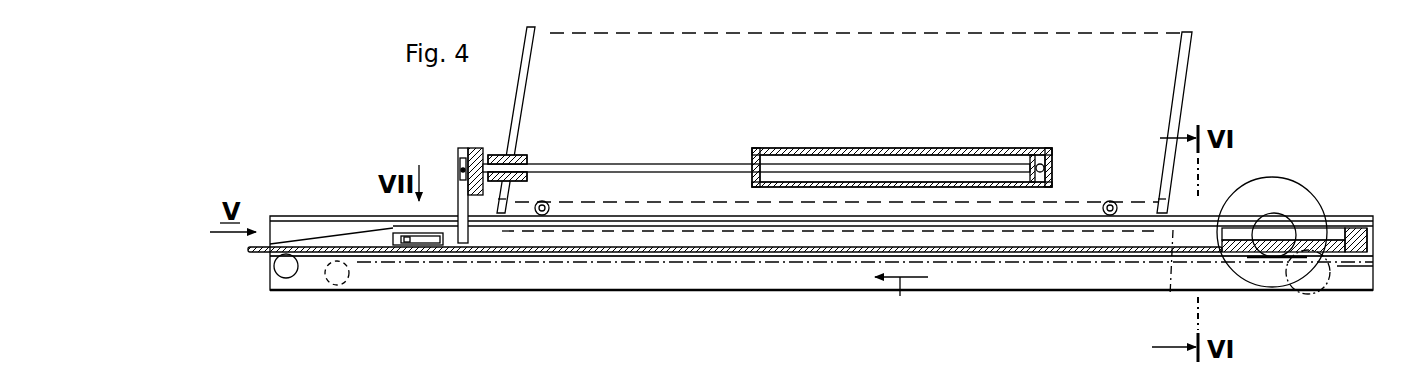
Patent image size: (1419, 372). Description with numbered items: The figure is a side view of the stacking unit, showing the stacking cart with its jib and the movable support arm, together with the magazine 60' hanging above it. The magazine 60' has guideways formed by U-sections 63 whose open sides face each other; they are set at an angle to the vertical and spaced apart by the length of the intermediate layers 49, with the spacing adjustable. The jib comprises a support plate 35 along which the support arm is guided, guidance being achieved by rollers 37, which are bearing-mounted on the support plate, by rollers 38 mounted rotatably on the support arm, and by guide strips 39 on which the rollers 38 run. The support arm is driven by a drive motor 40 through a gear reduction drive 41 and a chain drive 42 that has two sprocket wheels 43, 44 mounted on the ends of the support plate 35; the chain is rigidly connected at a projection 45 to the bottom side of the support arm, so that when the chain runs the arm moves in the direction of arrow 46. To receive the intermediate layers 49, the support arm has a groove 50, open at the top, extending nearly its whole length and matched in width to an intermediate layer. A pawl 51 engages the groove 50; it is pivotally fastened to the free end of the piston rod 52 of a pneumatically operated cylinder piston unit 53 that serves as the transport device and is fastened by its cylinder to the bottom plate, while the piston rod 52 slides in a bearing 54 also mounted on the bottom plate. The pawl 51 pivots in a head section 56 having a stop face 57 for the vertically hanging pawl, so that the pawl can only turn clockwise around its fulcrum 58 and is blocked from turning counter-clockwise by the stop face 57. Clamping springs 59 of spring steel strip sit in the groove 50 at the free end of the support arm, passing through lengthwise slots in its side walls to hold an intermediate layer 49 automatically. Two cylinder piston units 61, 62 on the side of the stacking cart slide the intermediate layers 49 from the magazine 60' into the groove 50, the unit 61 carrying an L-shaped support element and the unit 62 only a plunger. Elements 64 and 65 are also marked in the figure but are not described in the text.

The support plate 35 is at (467, 277).
The rollers 37 is at (288, 278).
The rollers 38 is at (1350, 253).
The guide strips 39 is at (1013, 260).
The drive motor 40 is at (1285, 210).
The gear reduction drive 41 is at (1295, 232).
The chain drive 42 is at (543, 293).
The sprocket wheel 43 is at (334, 284).
The sprocket wheel 44 is at (1305, 285).
The projection 45 is at (1253, 257).
The arrow 46 is at (901, 301).
The intermediate layers 49 is at (787, 240).
The groove 50 is at (639, 240).
The pawl 51 is at (463, 203).
The piston rod 52 is at (630, 164).
The cylinder piston unit 53 is at (855, 152).
The bearing 54 is at (522, 157).
The head section 56 is at (487, 135).
The stop face 57 is at (461, 175).
The fulcrum 58 is at (462, 167).
The clamping springs 59 is at (422, 240).
The magazine 60' is at (783, 70).
The cylinder piston unit 61 is at (549, 206).
The cylinder piston unit 62 is at (1111, 201).
The U-sections 63 is at (522, 90).
The axis 64 is at (1170, 278).
The lever 65 is at (1217, 233).